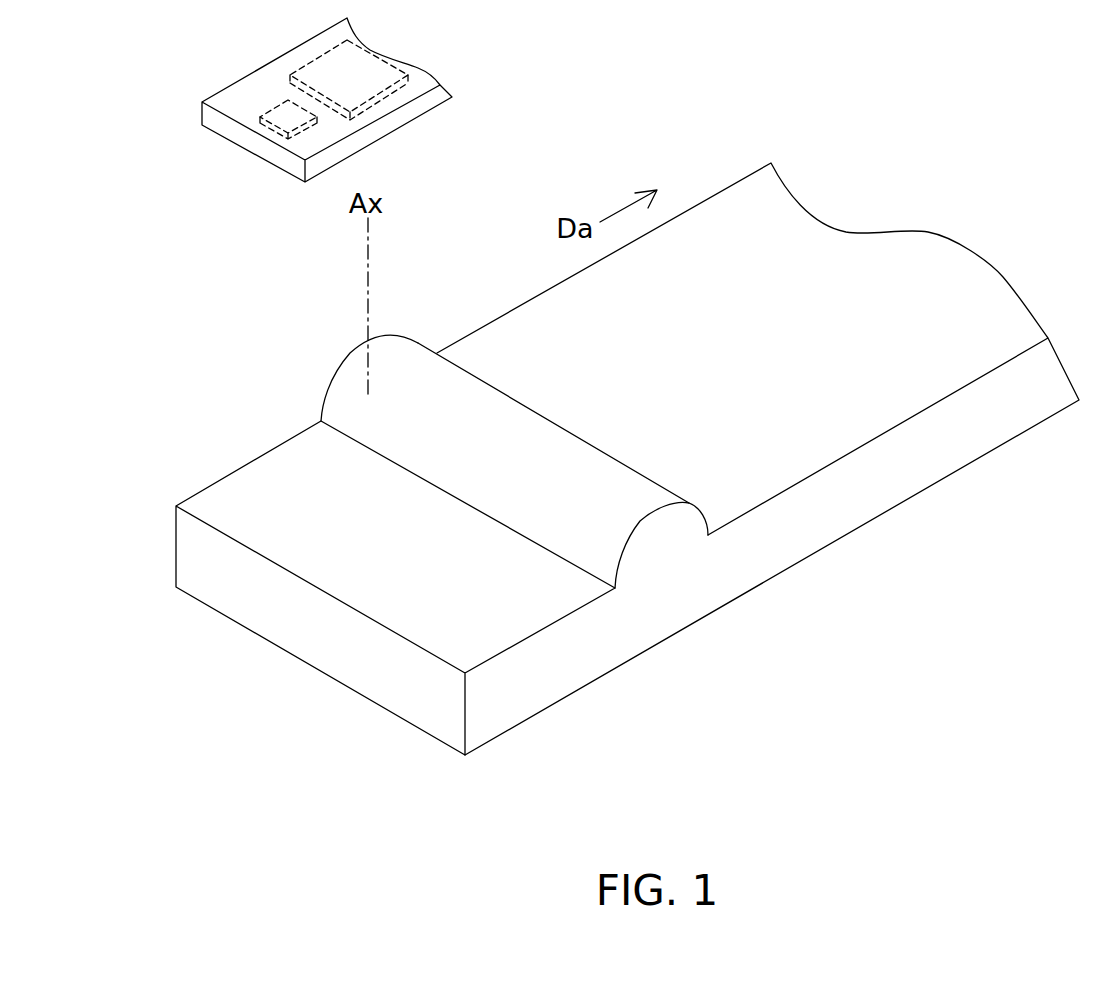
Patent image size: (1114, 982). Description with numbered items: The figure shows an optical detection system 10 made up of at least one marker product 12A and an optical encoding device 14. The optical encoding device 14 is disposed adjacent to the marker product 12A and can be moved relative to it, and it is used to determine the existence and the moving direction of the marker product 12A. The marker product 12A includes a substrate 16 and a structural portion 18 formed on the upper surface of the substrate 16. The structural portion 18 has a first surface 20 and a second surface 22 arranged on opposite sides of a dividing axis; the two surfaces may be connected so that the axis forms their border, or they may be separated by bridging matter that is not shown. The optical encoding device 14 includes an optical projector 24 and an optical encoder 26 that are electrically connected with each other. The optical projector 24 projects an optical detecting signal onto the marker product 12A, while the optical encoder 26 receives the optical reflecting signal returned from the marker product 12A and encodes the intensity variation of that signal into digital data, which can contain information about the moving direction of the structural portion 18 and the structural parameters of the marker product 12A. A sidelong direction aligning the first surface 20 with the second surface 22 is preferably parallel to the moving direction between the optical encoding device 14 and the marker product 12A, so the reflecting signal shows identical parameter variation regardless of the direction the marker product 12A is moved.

The optical detection system 10 is at (627, 450).
The marker product 12A is at (442, 546).
The optical encoding device 14 is at (303, 108).
The substrate 16 is at (573, 657).
The structural portion 18 is at (459, 520).
The first surface 20 is at (450, 378).
The second surface 22 is at (436, 327).
The optical projector 24 is at (283, 123).
The optical encoder 26 is at (377, 83).